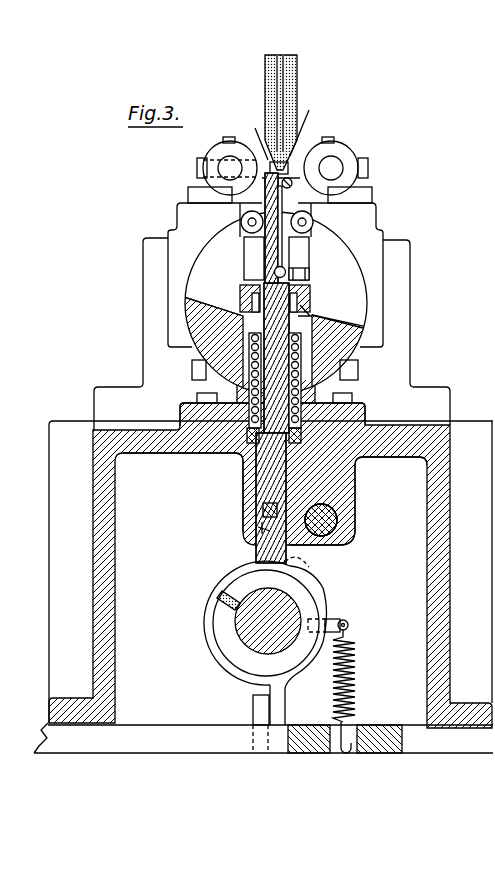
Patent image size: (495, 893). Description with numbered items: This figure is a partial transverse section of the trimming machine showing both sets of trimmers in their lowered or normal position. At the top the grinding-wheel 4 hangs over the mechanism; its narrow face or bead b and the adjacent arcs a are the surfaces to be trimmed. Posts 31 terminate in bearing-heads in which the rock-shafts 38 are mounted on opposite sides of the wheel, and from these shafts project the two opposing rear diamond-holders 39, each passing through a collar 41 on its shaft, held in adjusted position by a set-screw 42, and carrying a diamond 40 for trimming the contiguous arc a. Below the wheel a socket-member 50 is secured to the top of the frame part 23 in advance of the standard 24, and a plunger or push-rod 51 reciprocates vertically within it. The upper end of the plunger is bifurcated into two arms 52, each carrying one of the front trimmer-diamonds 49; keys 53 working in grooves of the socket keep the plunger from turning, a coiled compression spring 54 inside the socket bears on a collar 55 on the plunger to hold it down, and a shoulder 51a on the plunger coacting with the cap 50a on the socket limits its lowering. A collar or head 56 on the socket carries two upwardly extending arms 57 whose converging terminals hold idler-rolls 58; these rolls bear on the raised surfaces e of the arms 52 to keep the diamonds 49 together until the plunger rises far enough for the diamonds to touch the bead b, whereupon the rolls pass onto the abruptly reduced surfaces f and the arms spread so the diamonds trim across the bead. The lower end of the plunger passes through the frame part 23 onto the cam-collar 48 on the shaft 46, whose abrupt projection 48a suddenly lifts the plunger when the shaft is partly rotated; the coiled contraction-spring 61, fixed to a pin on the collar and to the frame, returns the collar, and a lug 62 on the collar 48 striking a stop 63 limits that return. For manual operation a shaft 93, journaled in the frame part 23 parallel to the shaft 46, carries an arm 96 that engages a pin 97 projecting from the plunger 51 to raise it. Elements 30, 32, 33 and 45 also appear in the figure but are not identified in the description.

The grinding-wheel 4 is at (300, 63).
The set-screw 42 is at (229, 137).
The contiguous arc of the grinding wheel a is at (280, 124).
The diamond 40 is at (288, 165).
The collar 41 is at (333, 147).
The rock-shaft 38 is at (223, 165).
The rear diamond-holder 39 is at (197, 168).
The post 31 is at (192, 195).
The front trimmer-diamond 49 is at (265, 190).
The raised surface e is at (289, 216).
The periphery or bead of the grinding-wheel b is at (264, 163).
The idler-roll 58 is at (241, 223).
The head housing 30 is at (275, 275).
The upwardly extending arm 57 is at (210, 263).
The abruptly reduced surface f is at (266, 250).
The arm 52 is at (273, 240).
The shoulder 51a is at (306, 273).
The cap 50a is at (242, 288).
The key 53 is at (309, 317).
The socket-member 50 is at (325, 336).
The standard 24 is at (400, 322).
The collar or head 56 is at (185, 345).
The housing foot 32 is at (192, 363).
The fastening bolt 33 is at (214, 381).
The collar 55 is at (347, 422).
The coiled compression spring 54 is at (199, 454).
The plunger or push-rod 51 is at (262, 468).
The pin 97 is at (268, 508).
The arm 96 is at (262, 528).
The frame part 23 is at (427, 513).
The shaft 93 is at (337, 523).
The abrupt projection 48a is at (307, 565).
The cam-collar 48 is at (307, 600).
The eccentric ring 45 is at (223, 578).
The shaft 46 is at (243, 630).
The coiled contraction-spring 61 is at (356, 674).
The lug 62 is at (279, 703).
The stop 63 is at (253, 706).